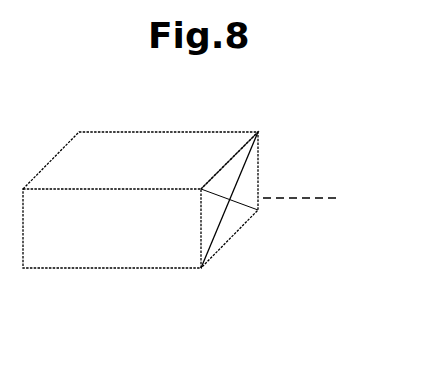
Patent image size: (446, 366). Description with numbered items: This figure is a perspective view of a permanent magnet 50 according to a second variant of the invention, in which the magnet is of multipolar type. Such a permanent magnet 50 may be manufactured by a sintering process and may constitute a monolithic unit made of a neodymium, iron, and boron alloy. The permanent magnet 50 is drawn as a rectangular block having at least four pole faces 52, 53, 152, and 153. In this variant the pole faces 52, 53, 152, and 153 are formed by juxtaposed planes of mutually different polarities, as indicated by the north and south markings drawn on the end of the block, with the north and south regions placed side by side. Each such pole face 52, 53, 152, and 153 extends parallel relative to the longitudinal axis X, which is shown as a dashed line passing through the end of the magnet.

The permanent magnet 50 is at (203, 186).
The pole face 52 is at (106, 150).
The pole face 53 is at (64, 247).
The pole face 153 is at (264, 170).
The pole face 152 is at (234, 262).